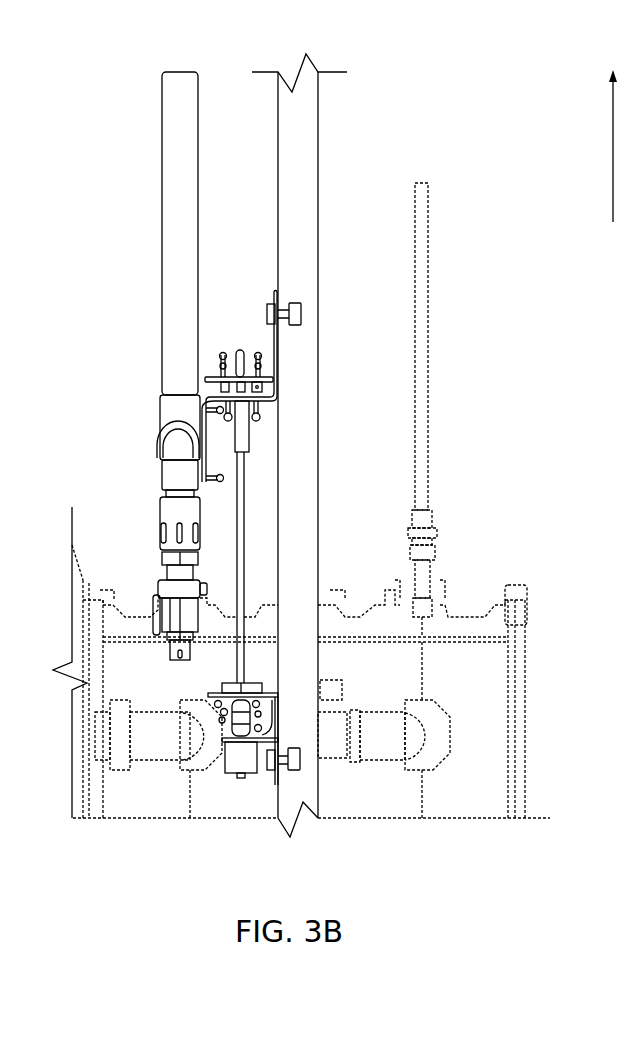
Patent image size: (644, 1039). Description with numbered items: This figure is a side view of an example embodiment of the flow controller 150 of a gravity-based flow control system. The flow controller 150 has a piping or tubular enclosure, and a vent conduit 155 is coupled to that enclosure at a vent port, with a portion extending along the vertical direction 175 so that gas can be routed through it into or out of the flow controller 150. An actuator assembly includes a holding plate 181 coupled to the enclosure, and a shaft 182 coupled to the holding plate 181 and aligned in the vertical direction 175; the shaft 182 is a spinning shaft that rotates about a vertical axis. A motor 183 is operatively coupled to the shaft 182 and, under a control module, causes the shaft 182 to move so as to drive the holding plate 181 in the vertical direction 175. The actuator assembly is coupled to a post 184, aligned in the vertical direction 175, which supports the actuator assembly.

The flow controller 150 is at (321, 456).
The vent conduit 155 is at (160, 188).
The vertical direction 175 is at (609, 150).
The holding plate 181 is at (282, 394).
The shaft 182 is at (250, 545).
The motor 183 is at (220, 775).
The post 184 is at (322, 161).